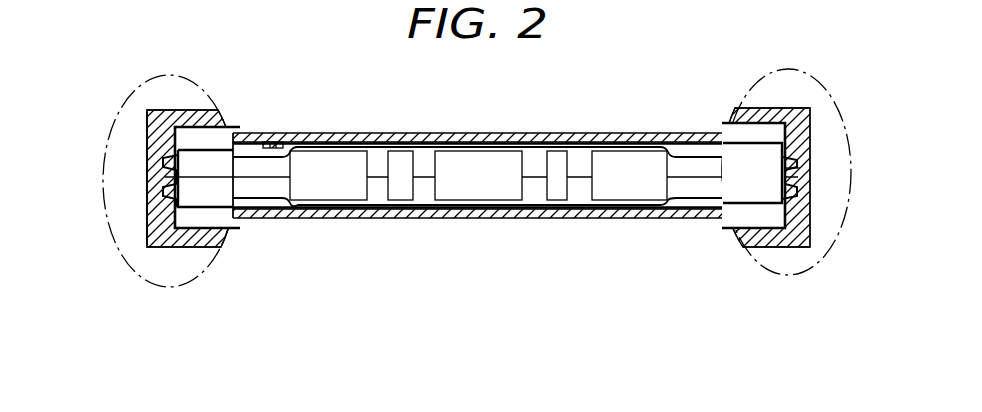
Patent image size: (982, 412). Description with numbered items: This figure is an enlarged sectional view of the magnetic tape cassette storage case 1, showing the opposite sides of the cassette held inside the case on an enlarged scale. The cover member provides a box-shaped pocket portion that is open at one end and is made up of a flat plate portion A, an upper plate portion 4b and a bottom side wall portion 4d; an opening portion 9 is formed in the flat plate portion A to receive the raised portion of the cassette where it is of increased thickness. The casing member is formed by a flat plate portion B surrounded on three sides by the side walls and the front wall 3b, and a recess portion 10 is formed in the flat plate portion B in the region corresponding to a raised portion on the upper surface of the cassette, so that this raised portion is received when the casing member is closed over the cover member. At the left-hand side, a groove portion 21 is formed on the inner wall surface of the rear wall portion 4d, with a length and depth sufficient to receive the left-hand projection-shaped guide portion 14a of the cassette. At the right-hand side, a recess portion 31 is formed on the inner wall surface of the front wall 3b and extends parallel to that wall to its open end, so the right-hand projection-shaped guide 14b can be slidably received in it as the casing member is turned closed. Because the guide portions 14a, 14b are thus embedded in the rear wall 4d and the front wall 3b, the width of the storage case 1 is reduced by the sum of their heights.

The magnetic tape cassette storage case 1 is at (500, 170).
The front wall 3b is at (813, 113).
The upper plate portion 4b is at (190, 115).
The bottom side wall portion 4d is at (148, 130).
The opening portion 9 is at (570, 203).
The recess portion 10 is at (540, 146).
The left-hand projection-shaped guide portion 14a is at (165, 177).
The right-hand projection-shaped guide portion 14b is at (780, 168).
The groove portion 21 is at (160, 203).
The recess portion 31 is at (793, 212).
The flat plate portion A is at (203, 242).
The flat plate portion B is at (417, 133).